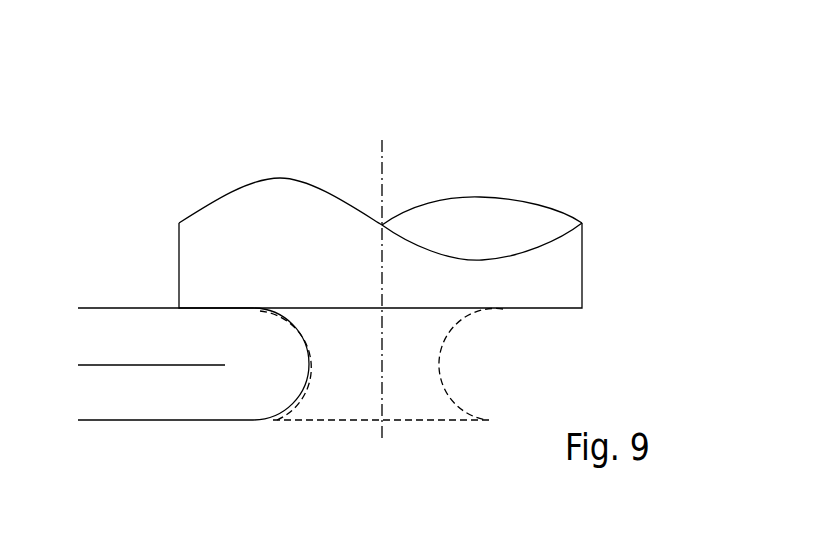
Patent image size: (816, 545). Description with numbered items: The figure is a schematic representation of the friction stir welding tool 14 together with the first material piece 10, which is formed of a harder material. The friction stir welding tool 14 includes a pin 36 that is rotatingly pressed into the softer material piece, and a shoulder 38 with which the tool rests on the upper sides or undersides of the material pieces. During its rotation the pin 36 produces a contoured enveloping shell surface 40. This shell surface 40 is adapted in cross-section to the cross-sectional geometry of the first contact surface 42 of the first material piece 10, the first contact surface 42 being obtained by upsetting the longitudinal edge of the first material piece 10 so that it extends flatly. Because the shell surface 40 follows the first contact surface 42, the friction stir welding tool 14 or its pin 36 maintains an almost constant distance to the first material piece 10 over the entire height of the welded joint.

The friction stir welding tool 14 is at (555, 160).
The shoulder 38 is at (565, 273).
The first material piece 10 is at (102, 402).
The pin 36 is at (405, 405).
The contoured enveloping shell surface 40 is at (455, 368).
The first contact surface 42 is at (306, 362).